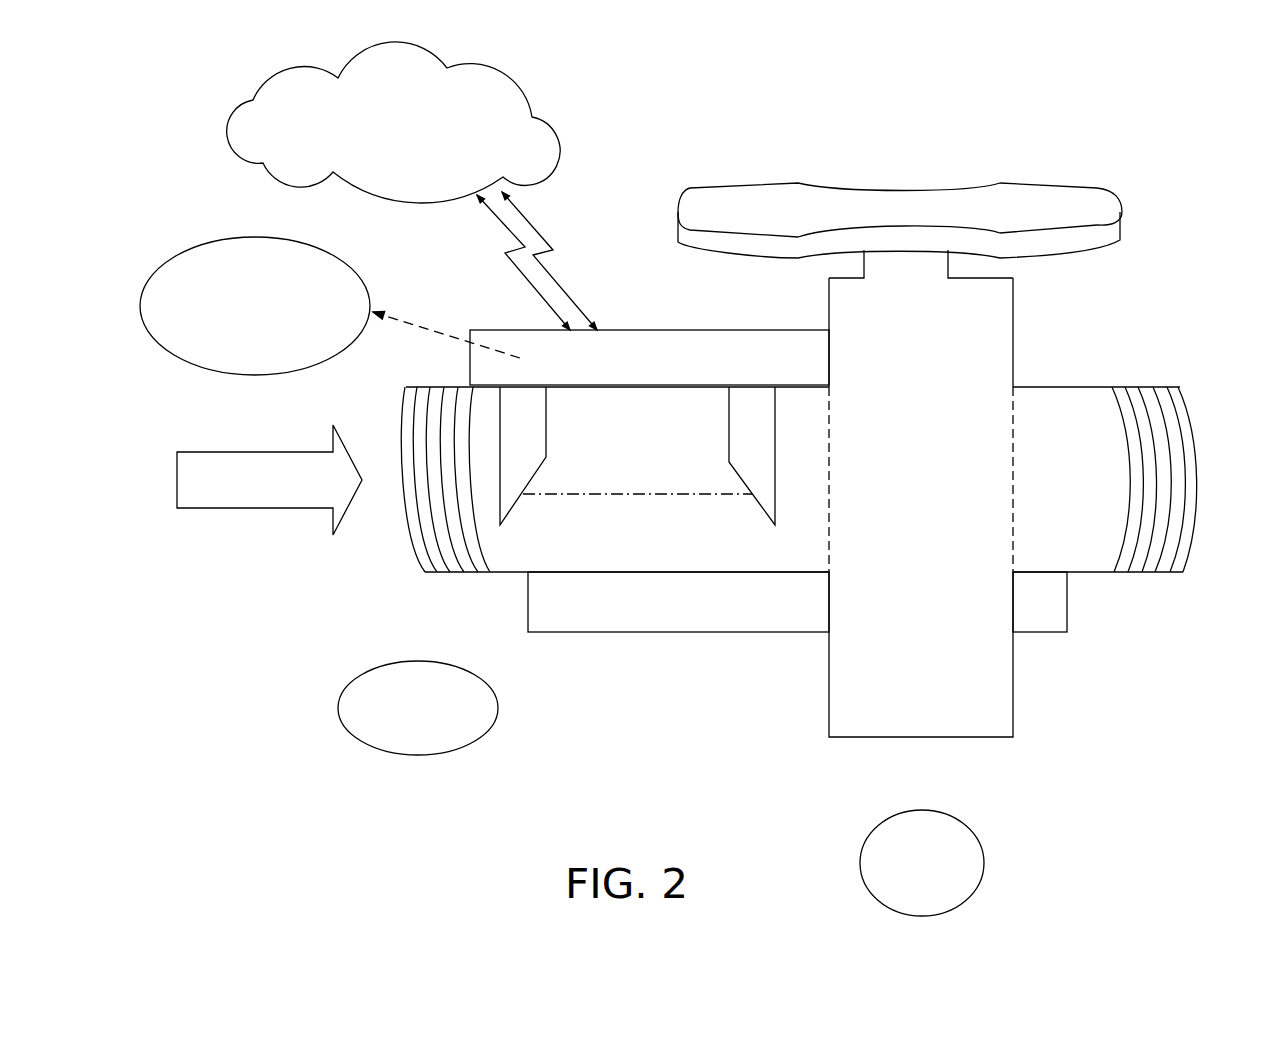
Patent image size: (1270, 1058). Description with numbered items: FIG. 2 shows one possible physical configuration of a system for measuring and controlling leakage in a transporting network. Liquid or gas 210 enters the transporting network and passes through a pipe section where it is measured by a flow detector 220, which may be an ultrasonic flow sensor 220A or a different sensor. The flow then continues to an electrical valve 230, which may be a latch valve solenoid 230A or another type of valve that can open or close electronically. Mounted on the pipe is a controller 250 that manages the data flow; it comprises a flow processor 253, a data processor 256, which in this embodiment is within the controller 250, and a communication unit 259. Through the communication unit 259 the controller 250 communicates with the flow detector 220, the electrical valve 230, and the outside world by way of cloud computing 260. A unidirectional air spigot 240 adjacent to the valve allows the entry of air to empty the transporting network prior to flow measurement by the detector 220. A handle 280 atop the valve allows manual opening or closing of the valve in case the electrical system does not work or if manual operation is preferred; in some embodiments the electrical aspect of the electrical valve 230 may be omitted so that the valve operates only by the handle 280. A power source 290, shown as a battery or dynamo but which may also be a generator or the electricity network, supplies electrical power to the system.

The liquid or gas 210 is at (190, 508).
The flow detector 220 is at (597, 432).
The ultrasonic flow sensor 220A is at (555, 493).
The electrical valve 230 is at (863, 738).
The latch valve solenoid 230A is at (922, 560).
The unidirectional air spigot 240 is at (1042, 598).
The controller 250 is at (711, 340).
The flow processor 253 is at (178, 275).
The data processor 256 is at (177, 303).
The communication unit 259 is at (155, 325).
The cloud computing 260 is at (511, 70).
The handle 280 is at (1100, 193).
The power source 290 is at (673, 632).